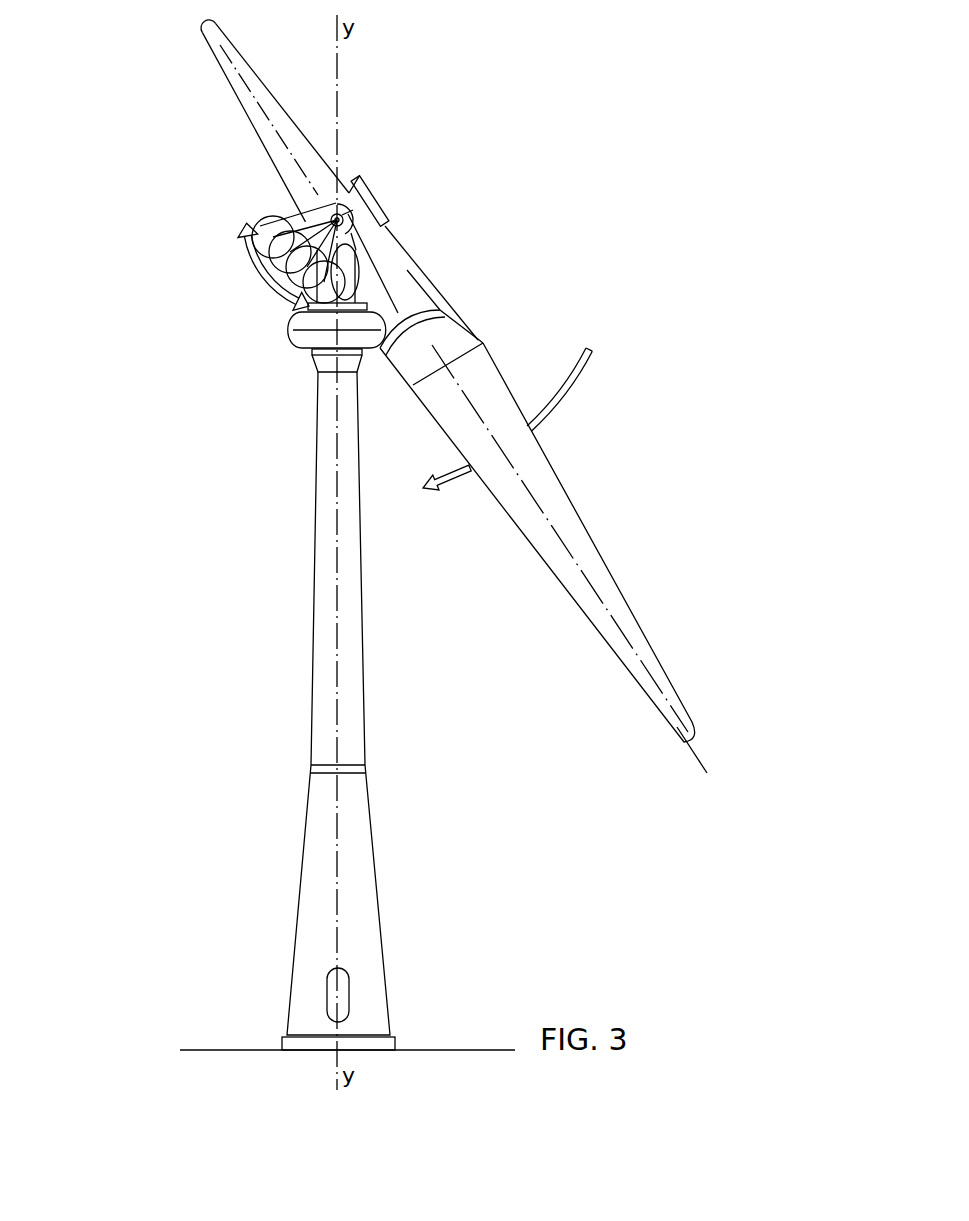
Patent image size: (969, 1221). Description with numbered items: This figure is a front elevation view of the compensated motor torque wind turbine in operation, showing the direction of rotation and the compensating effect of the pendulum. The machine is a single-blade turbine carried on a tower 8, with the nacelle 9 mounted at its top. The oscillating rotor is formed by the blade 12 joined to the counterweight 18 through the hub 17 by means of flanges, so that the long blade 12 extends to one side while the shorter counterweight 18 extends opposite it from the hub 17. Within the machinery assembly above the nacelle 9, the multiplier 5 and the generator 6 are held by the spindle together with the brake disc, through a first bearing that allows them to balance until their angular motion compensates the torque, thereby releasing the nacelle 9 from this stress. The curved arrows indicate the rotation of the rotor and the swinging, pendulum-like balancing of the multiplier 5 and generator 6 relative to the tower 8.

The multiplier 5 is at (300, 222).
The generator 6 is at (290, 278).
The tower 8 is at (328, 536).
The nacelle 9 is at (305, 337).
The blade 12 is at (583, 546).
The hub 17 is at (412, 295).
The counterweight 18 is at (205, 30).